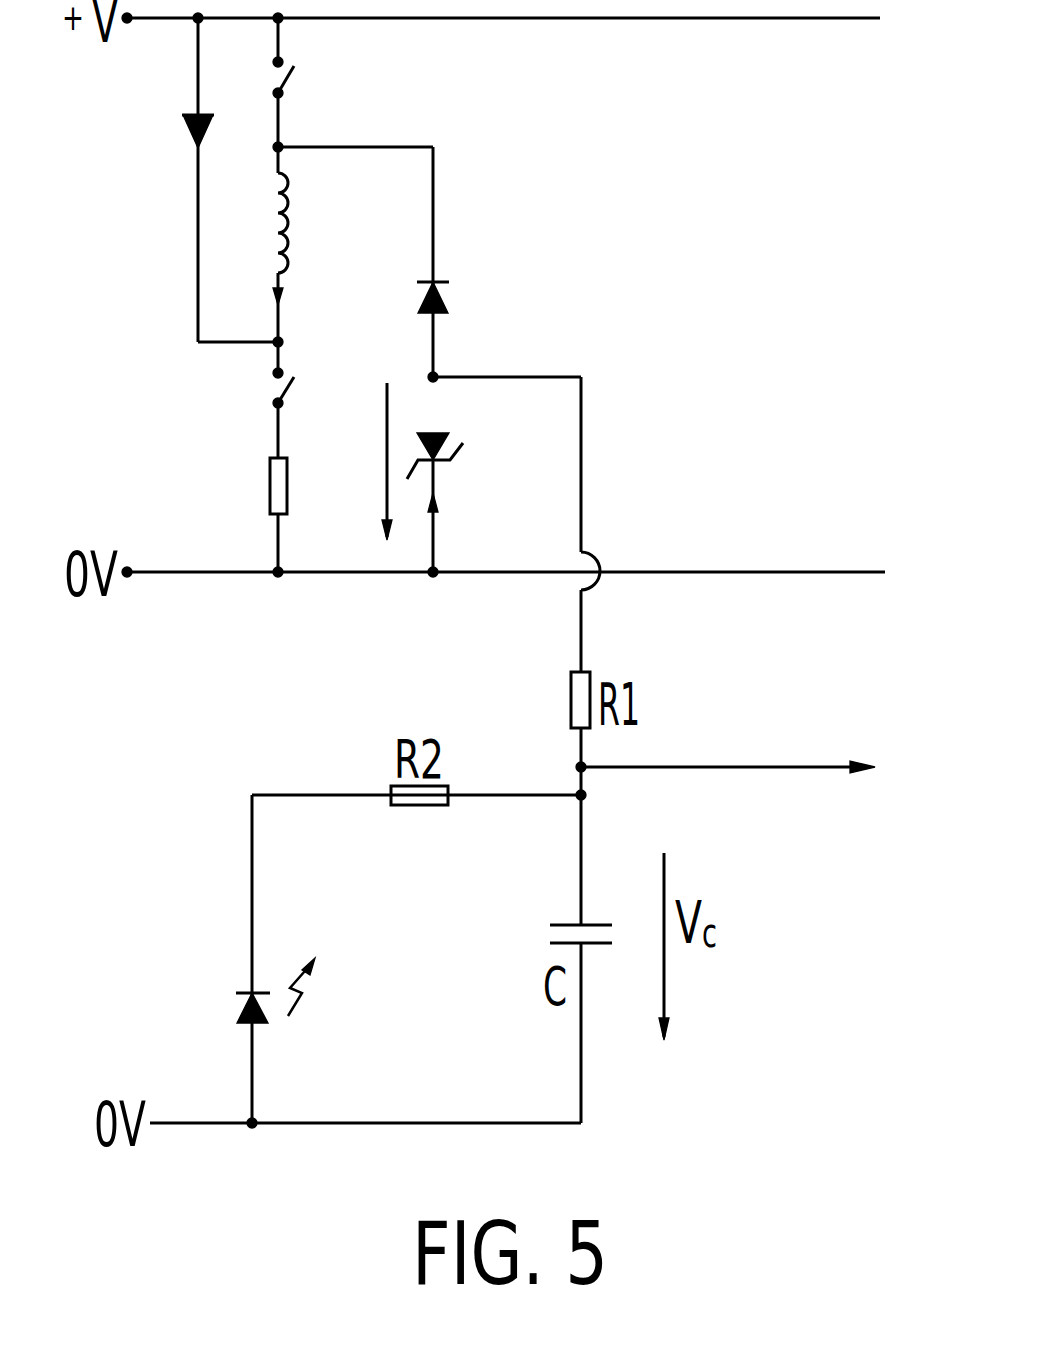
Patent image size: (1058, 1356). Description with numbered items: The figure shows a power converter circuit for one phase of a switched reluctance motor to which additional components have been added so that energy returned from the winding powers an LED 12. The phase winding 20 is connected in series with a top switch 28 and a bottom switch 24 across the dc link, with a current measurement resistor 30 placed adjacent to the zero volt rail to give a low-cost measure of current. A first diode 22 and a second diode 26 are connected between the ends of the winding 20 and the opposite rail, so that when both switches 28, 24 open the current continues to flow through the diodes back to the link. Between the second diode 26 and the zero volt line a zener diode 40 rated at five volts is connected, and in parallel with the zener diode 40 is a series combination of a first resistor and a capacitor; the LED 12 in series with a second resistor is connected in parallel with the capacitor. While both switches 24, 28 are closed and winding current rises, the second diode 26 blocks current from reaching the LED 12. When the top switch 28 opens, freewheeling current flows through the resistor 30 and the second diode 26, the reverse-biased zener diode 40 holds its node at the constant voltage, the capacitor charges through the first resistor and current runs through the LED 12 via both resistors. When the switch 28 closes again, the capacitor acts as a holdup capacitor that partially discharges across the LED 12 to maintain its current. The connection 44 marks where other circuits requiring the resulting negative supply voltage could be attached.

The LED 12 is at (234, 1008).
The phase winding 20 is at (302, 235).
The diode 22 is at (178, 130).
The bottom switch 24 is at (270, 383).
The second diode 26 is at (458, 295).
The top switch 28 is at (296, 92).
The current measurement resistor 30 is at (270, 476).
The zener diode 40 is at (457, 433).
The connection 44 is at (800, 767).